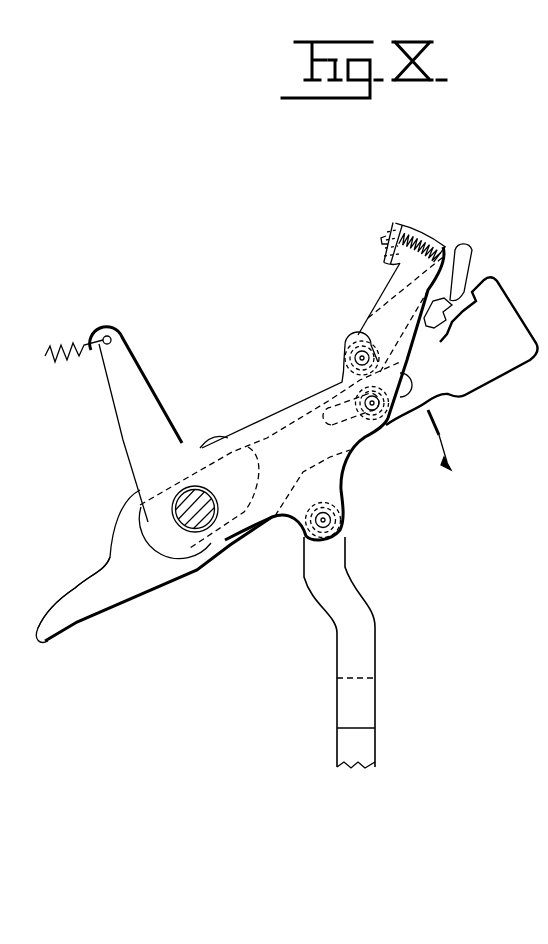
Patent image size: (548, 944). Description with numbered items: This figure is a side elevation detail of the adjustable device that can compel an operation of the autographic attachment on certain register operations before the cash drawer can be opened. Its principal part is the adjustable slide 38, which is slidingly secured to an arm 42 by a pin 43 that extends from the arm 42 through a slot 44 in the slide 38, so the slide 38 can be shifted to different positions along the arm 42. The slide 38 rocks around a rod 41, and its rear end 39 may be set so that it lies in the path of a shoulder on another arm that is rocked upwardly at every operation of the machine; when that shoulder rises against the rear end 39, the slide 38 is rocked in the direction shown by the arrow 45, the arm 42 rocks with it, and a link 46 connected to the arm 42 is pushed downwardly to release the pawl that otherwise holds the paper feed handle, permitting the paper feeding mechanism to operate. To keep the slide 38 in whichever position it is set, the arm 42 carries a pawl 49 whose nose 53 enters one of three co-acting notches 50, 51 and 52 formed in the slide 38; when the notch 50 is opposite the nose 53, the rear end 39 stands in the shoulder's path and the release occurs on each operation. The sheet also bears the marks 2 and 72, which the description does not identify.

The partial reference numeral at sheet edge 2 is at (9, 228).
The adjustable slide 38 is at (157, 573).
The rear end 39 is at (52, 612).
The rod 41 is at (190, 512).
The arm 42 is at (258, 422).
The pin 43 is at (372, 405).
The slot 44 is at (425, 398).
The arrow 45 is at (440, 445).
The link 46 is at (367, 603).
The pawl 49 is at (361, 320).
The notch 50 is at (473, 288).
The notch 51 is at (457, 313).
The notch 52 is at (426, 332).
The nose 53 is at (450, 305).
The spring 72 is at (63, 342).